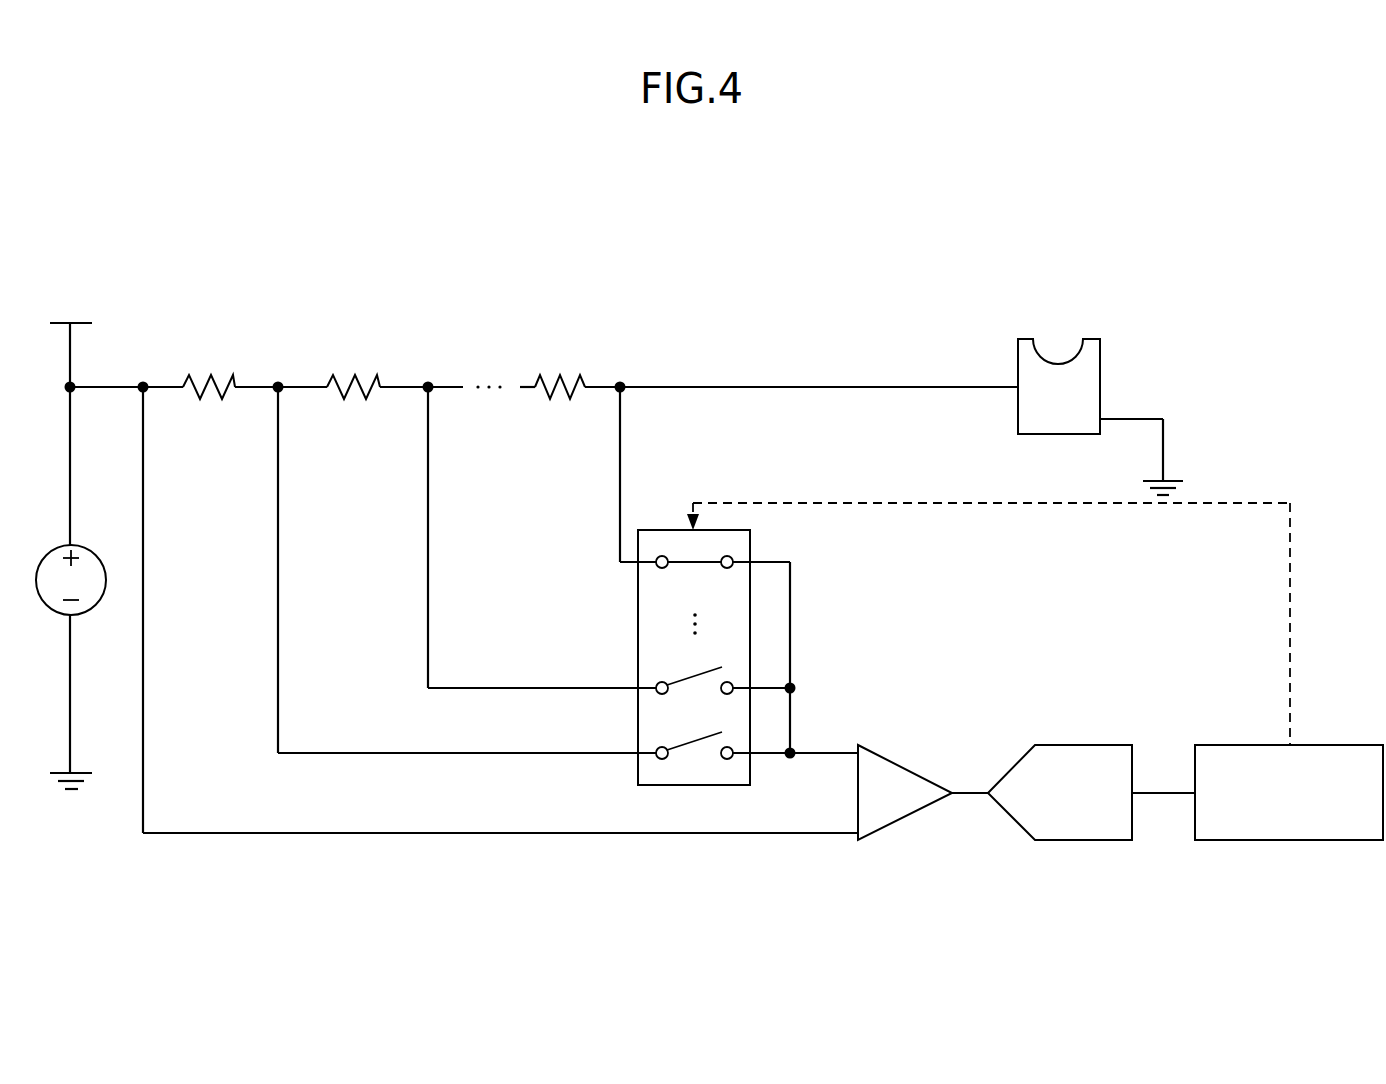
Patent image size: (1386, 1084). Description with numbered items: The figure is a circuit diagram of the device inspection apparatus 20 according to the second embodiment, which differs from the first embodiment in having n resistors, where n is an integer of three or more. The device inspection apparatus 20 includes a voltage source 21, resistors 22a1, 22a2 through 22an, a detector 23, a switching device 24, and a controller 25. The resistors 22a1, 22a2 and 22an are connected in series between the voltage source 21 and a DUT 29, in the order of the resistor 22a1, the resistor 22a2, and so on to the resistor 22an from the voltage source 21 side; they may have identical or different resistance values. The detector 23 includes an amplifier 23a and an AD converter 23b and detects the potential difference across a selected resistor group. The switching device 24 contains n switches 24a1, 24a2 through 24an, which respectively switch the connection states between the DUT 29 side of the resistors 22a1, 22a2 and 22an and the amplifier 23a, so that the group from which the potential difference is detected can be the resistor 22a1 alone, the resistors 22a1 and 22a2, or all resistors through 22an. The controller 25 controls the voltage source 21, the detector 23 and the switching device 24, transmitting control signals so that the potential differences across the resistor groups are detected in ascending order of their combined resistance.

The device inspection apparatus 20 is at (321, 247).
The voltage source 21 is at (44, 560).
The resistor 22a1 is at (206, 380).
The resistor 22a2 is at (351, 380).
The resistor 22an is at (556, 380).
The detector 23 is at (990, 874).
The amplifier 23a is at (908, 765).
The AD converter 23b is at (1085, 745).
The switching device 24 is at (680, 530).
The switch 24a1 is at (693, 742).
The switch 24a2 is at (693, 677).
The switch 24an is at (693, 560).
The controller 25 is at (1240, 745).
The DUT 29 is at (1058, 340).